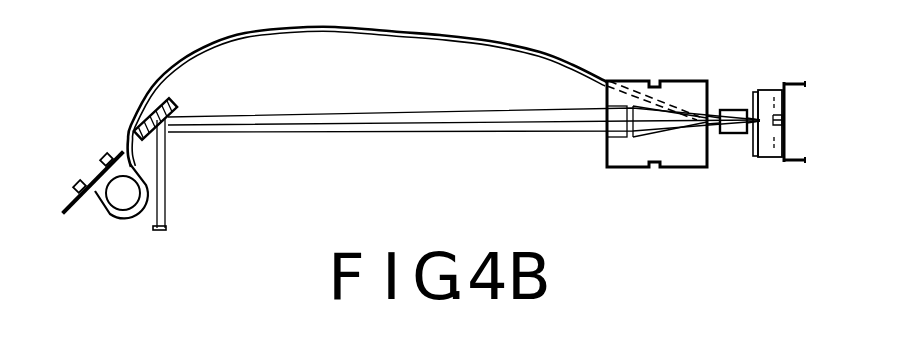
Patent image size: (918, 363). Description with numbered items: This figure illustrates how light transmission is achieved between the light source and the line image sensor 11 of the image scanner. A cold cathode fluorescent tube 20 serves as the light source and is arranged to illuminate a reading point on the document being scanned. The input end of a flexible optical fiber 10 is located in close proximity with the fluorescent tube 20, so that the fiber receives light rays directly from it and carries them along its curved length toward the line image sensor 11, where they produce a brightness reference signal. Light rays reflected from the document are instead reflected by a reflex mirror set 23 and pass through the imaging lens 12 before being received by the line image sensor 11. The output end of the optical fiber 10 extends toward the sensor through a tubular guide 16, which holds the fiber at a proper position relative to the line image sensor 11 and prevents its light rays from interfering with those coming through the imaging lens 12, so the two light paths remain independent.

The optical fiber 10 is at (413, 36).
The line image sensor 11 is at (767, 83).
The imaging lens 12 is at (625, 158).
The tubular guide 16 is at (737, 134).
The cold cathode fluorescent tube 20 is at (127, 198).
The reflex mirror set 23 is at (173, 112).